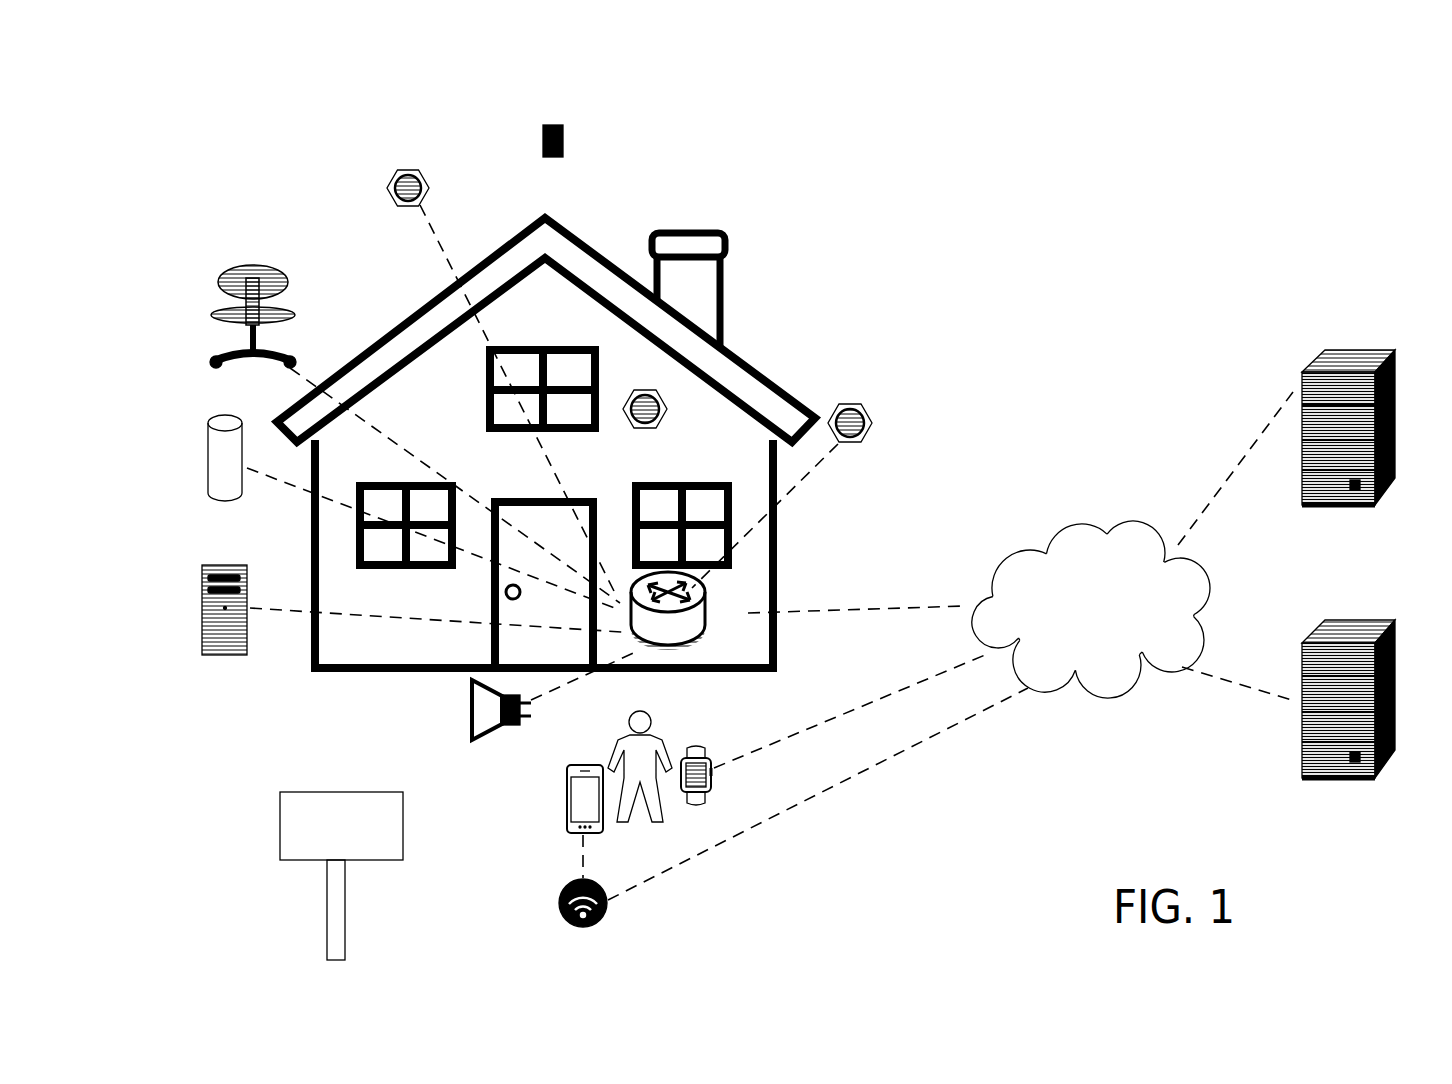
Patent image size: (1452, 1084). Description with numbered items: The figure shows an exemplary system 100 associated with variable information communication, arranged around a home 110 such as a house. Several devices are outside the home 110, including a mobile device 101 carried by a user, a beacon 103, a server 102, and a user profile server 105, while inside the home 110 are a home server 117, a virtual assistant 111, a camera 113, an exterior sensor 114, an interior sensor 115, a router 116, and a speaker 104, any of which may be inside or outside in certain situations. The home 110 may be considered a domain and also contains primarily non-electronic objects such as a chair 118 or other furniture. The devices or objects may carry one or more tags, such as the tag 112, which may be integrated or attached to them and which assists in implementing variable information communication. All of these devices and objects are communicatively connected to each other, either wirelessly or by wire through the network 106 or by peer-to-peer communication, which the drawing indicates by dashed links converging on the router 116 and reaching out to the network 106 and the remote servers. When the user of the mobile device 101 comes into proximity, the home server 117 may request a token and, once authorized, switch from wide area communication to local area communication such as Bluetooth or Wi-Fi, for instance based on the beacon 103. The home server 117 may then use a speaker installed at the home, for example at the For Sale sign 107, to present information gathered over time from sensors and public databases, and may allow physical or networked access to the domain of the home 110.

The system 100 is at (202, 84).
The mobile device 101 is at (583, 800).
The server 102 is at (1348, 348).
The beacon 103 is at (583, 878).
The speaker 104 is at (470, 680).
The user profile server 105 is at (1348, 618).
The network 106 is at (1091, 609).
The For Sale sign 107 is at (332, 792).
The home 110 is at (575, 236).
The virtual assistant 111 is at (220, 415).
The tag 112 is at (560, 125).
The camera 113 is at (662, 394).
The exterior sensor 114 is at (418, 168).
The interior sensor 115 is at (873, 420).
The router 116 is at (705, 615).
The home server 117 is at (226, 565).
The chair 118 is at (238, 265).